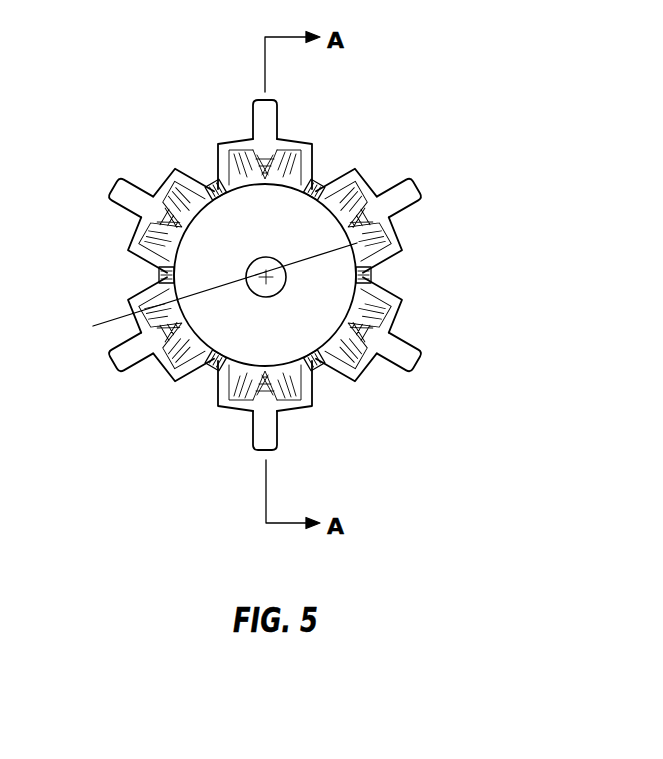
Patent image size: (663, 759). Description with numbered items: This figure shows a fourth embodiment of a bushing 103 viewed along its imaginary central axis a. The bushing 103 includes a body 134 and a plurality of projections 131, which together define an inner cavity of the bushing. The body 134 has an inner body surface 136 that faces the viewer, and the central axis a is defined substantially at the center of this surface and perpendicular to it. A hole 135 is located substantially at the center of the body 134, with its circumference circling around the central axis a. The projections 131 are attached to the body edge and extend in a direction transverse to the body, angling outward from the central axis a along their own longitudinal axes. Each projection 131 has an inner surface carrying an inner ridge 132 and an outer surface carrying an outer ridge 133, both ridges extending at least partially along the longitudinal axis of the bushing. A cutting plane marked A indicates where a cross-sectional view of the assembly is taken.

The bushing 103 is at (269, 253).
The projections 131 is at (269, 285).
The inner ridge 132 is at (143, 235).
The outer ridge 133 is at (408, 192).
The body 134 is at (255, 340).
The hole 135 is at (159, 307).
The inner body surface 136 is at (213, 259).
The central axis a is at (367, 232).